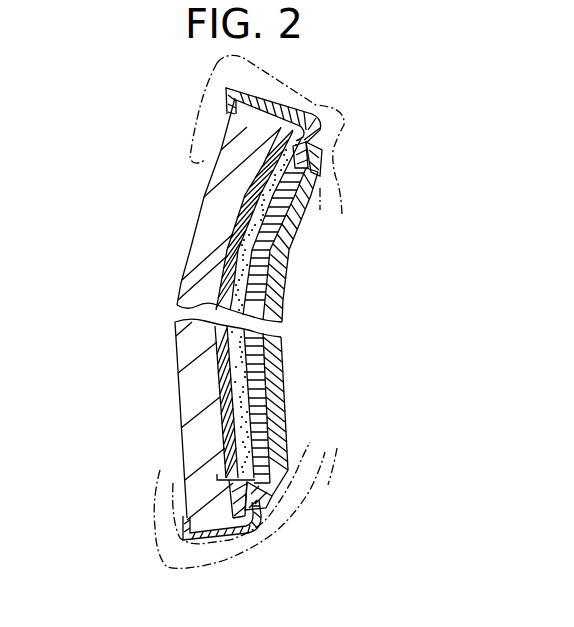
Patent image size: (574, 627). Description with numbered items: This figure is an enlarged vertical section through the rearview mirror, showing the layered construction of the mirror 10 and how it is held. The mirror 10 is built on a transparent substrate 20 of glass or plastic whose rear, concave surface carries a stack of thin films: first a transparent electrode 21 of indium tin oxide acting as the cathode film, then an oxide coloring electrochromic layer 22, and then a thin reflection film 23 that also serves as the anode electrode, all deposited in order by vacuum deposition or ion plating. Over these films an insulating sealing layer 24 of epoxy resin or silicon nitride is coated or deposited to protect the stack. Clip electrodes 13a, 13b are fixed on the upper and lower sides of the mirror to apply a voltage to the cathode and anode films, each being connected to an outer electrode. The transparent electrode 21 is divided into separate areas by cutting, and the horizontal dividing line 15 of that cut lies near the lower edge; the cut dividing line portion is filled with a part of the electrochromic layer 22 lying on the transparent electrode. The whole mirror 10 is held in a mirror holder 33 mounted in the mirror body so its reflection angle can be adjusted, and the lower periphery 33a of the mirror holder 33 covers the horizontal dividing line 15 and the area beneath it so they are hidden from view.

The mirror 10 is at (180, 153).
The clip electrode 13a is at (303, 106).
The clip electrode 13b is at (212, 543).
The horizontal dividing line 15 is at (229, 476).
The transparent substrate 20 is at (193, 391).
The transparent electrode 21 is at (303, 152).
The electrochromic layer 22 is at (250, 440).
The reflection film 23 is at (265, 411).
The insulating sealing layer 24 is at (272, 358).
The mirror holder 33 is at (299, 90).
The lower periphery 33a is at (175, 550).